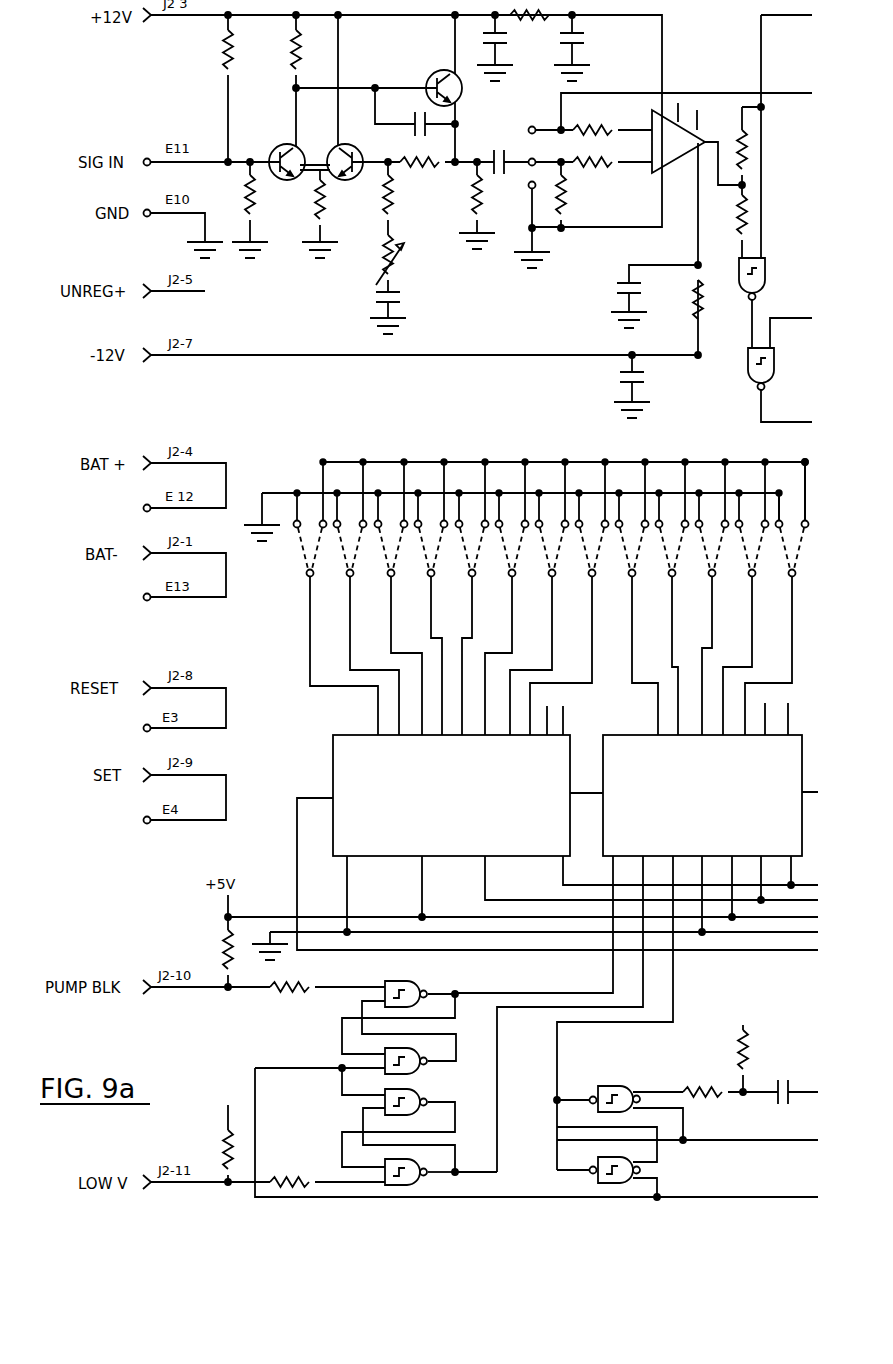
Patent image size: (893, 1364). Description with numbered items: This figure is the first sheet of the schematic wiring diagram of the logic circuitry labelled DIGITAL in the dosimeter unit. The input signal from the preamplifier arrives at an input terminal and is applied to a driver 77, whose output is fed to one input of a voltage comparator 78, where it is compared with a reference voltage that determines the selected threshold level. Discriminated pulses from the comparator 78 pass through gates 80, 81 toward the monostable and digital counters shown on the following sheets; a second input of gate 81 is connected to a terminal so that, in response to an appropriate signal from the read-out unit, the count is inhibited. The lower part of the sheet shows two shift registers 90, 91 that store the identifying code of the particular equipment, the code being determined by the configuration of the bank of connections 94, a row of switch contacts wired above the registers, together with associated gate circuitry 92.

The driver 77 is at (316, 151).
The voltage comparator 78 is at (654, 172).
The gate 80 is at (766, 277).
The gate 81 is at (748, 368).
The shift register 90 is at (702, 795).
The shift register 91 is at (451, 795).
The gate circuit 92 is at (658, 1103).
The bank of connections 94 is at (430, 476).